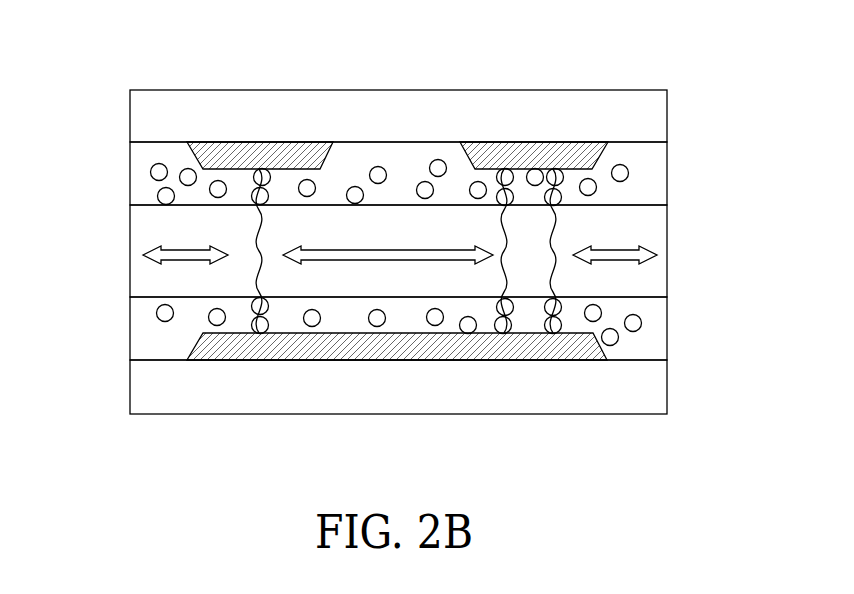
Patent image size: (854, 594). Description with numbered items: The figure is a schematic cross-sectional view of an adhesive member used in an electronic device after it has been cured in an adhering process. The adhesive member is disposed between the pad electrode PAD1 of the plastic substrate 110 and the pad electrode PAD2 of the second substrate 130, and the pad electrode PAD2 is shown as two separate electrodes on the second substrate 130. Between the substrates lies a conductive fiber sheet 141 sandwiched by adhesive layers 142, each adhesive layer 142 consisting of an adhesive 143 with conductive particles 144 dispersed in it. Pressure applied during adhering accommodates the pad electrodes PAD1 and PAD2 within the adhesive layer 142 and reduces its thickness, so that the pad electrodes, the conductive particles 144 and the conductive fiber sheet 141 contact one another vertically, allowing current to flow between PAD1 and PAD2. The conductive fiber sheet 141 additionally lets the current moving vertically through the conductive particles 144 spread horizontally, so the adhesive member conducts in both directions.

The plastic substrate 110 is at (643, 380).
The second substrate 130 is at (643, 113).
The conductive fiber sheet 141 is at (643, 236).
The adhesive layer 142 is at (130, 172).
The adhesive 143 is at (640, 159).
The conductive particles 144 is at (596, 189).
The pad electrode PAD1 is at (497, 347).
The pad electrode PAD2 is at (492, 150).